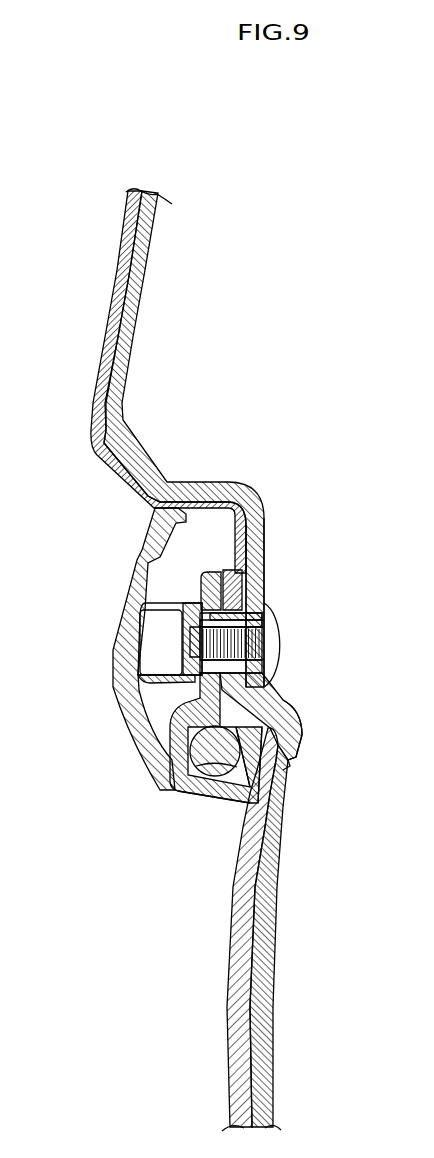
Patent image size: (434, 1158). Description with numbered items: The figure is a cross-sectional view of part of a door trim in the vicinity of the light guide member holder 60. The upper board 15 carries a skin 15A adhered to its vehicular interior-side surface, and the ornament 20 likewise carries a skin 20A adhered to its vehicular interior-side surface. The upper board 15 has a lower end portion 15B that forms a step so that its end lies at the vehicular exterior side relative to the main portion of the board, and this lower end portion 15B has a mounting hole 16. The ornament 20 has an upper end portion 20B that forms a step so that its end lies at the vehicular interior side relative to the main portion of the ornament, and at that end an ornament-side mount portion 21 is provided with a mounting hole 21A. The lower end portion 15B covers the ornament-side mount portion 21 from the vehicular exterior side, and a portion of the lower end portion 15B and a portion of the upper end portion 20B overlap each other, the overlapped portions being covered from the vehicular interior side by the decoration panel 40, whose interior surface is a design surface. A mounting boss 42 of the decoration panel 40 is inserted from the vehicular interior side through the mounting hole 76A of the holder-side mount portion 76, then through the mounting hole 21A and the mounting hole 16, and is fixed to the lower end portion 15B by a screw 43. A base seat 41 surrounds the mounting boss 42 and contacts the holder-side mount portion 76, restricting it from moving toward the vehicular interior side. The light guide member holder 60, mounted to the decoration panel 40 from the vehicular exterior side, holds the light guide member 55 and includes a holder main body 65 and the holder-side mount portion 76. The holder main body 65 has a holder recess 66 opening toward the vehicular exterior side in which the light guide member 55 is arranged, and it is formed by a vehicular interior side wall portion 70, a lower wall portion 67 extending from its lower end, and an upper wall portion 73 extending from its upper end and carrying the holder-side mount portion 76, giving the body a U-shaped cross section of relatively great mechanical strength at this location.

The upper board 15 is at (151, 257).
The skin 15A is at (124, 247).
The lower end portion 15B is at (258, 590).
The mounting hole 16 is at (248, 613).
The ornament 20 is at (262, 1017).
The skin 20A is at (234, 1013).
The upper end portion 20B is at (250, 698).
The ornament-side mount portion 21 is at (230, 592).
The mounting hole 21A is at (240, 652).
The decoration panel 40 is at (133, 602).
The base seat 41 is at (166, 676).
The mounting boss 42 is at (250, 621).
The screw 43 is at (271, 662).
The light guide member 55 is at (302, 742).
The light guide member holder 60 is at (151, 779).
The holder main body 65 is at (151, 746).
The holder recess 66 is at (272, 780).
The lower wall portion 67 is at (195, 795).
The vehicular interior side wall portion 70 is at (222, 752).
The upper wall portion 73 is at (185, 708).
The holder-side mount portion 76 is at (213, 600).
The mounting hole 76A is at (190, 647).